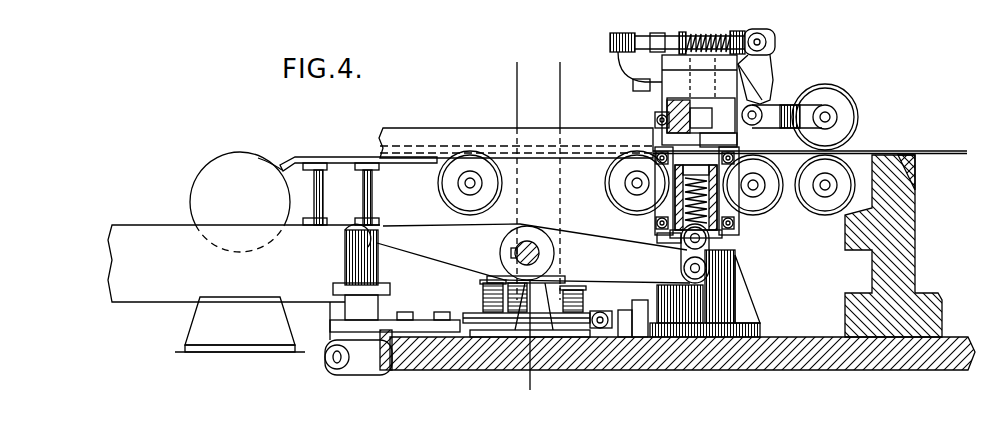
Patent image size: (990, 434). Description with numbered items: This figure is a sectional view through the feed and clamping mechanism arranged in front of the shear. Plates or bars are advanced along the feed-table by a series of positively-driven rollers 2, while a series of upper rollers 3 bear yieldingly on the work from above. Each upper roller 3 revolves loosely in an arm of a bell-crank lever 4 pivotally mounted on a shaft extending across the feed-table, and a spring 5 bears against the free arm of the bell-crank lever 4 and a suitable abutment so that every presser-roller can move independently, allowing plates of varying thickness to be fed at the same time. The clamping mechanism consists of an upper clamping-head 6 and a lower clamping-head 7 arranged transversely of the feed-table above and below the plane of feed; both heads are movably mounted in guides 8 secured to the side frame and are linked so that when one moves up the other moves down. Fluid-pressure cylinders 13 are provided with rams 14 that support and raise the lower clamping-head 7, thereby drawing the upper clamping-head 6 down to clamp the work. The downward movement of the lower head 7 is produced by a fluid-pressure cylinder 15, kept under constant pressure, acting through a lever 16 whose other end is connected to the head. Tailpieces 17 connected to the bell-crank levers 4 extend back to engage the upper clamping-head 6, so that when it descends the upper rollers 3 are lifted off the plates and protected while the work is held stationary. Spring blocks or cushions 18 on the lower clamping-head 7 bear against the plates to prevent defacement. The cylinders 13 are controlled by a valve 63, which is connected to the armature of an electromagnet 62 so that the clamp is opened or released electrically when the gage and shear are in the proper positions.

The positively-driven rollers 2 is at (437, 185).
The upper rollers 3 is at (841, 98).
The bell-crank levers 4 is at (760, 72).
The springs 5 is at (713, 31).
The upper clamping-head 6 is at (657, 127).
The lower clamping-head 7 is at (683, 213).
The guides 8 is at (722, 209).
The fluid-pressure cylinders 13 is at (726, 293).
The rams 14 is at (724, 248).
The fluid-pressure cylinder 15 is at (386, 307).
The lever 16 is at (533, 277).
The tailpieces 17 is at (667, 114).
The spring blocks or cushions 18 is at (727, 150).
The electromagnet 62 is at (483, 295).
The valve 63 is at (555, 340).